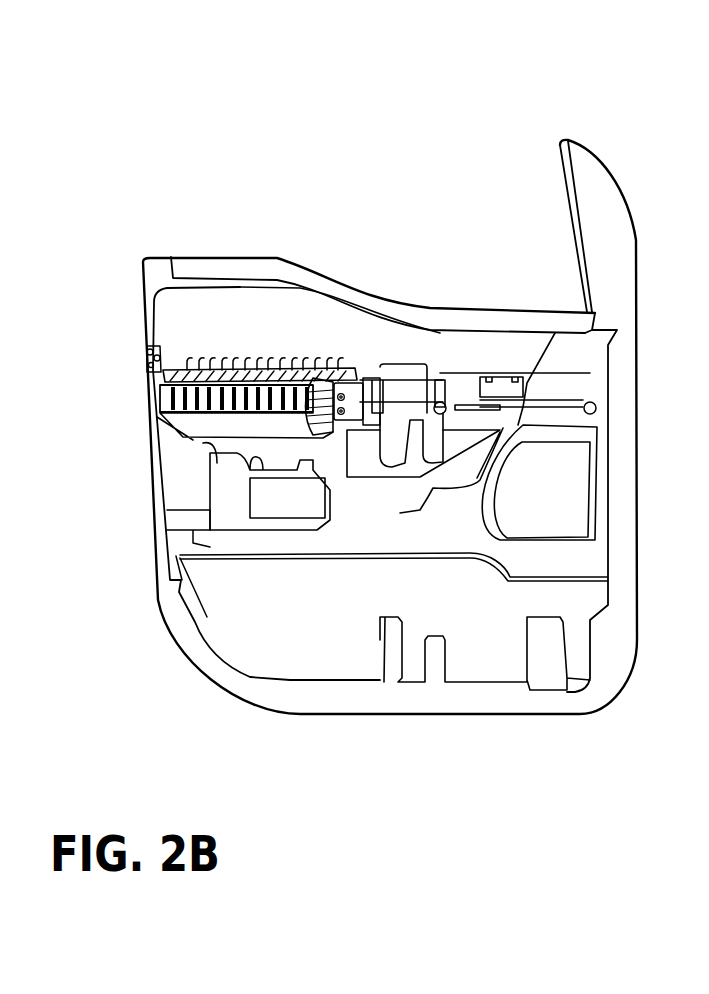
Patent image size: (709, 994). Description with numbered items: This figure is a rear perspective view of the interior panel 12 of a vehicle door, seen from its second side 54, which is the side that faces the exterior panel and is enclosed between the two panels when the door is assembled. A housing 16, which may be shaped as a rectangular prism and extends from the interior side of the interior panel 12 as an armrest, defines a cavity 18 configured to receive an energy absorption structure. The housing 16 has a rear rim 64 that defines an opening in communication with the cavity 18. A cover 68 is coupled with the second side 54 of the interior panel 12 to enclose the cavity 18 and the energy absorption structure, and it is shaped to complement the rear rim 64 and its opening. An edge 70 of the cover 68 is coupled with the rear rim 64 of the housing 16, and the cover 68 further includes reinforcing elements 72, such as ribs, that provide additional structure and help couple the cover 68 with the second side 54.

The interior panel 12 is at (232, 172).
The second side 54 is at (183, 315).
The reinforcing elements 72 is at (185, 376).
The cover 68 is at (197, 420).
The edge 70 is at (190, 435).
The cavity 18 is at (351, 384).
The rear rim 64 is at (372, 383).
The housing 16 is at (440, 385).